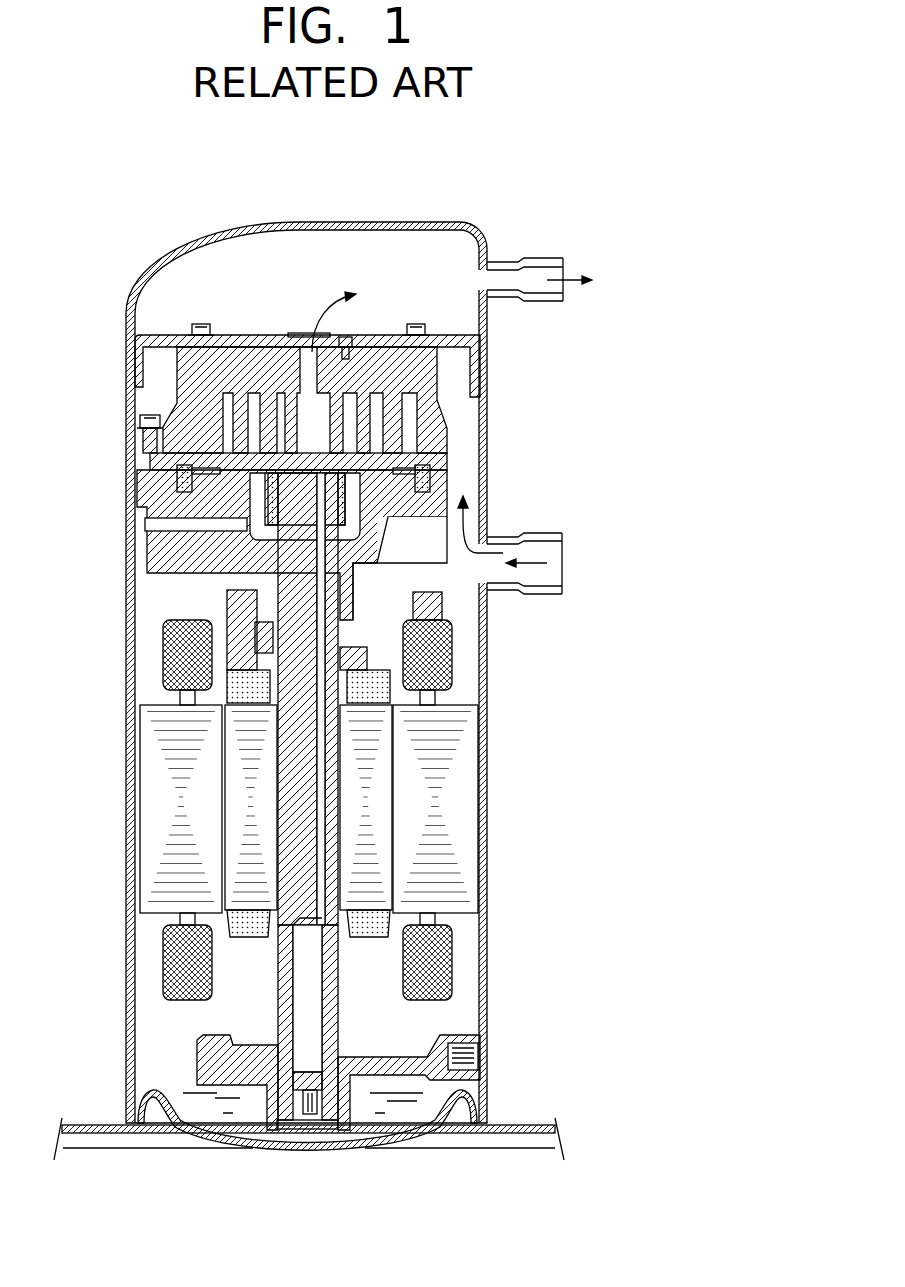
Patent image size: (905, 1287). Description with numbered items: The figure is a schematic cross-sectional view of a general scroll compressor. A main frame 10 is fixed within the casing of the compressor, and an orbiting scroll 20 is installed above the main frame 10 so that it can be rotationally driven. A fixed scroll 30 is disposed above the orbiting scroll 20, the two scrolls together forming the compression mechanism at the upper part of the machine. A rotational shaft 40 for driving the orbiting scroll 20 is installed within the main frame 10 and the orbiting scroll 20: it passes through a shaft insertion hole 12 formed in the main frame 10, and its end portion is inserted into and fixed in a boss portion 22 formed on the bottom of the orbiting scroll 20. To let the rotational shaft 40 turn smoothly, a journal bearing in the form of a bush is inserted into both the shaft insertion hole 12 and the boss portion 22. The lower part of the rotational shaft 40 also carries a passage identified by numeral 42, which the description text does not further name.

The main frame 10 is at (257, 545).
The shaft insertion hole 12 is at (258, 582).
The orbiting scroll 20 is at (188, 462).
The boss portion 22 is at (262, 494).
The fixed scroll 30 is at (183, 377).
The rotational shaft 40 is at (202, 796).
The oil passage 42 is at (303, 968).